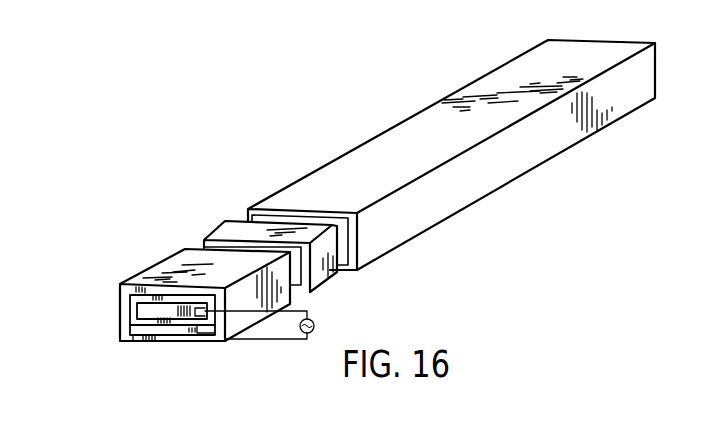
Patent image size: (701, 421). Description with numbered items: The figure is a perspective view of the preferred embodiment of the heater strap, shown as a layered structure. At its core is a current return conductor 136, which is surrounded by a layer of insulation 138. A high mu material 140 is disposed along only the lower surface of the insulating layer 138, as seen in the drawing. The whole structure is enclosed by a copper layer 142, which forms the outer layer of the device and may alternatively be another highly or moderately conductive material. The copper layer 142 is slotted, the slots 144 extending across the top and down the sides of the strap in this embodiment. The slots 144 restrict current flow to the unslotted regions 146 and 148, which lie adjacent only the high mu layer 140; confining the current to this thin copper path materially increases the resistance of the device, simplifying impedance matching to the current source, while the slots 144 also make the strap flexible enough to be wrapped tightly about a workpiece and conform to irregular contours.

The current return conductor 136 is at (172, 306).
The layer of insulation 138 is at (134, 310).
The high mu material 140 is at (142, 336).
The copper layer 142 is at (120, 335).
The slots 144 is at (295, 300).
The unslotted region 146 is at (158, 343).
The unslotted region 148 is at (210, 343).